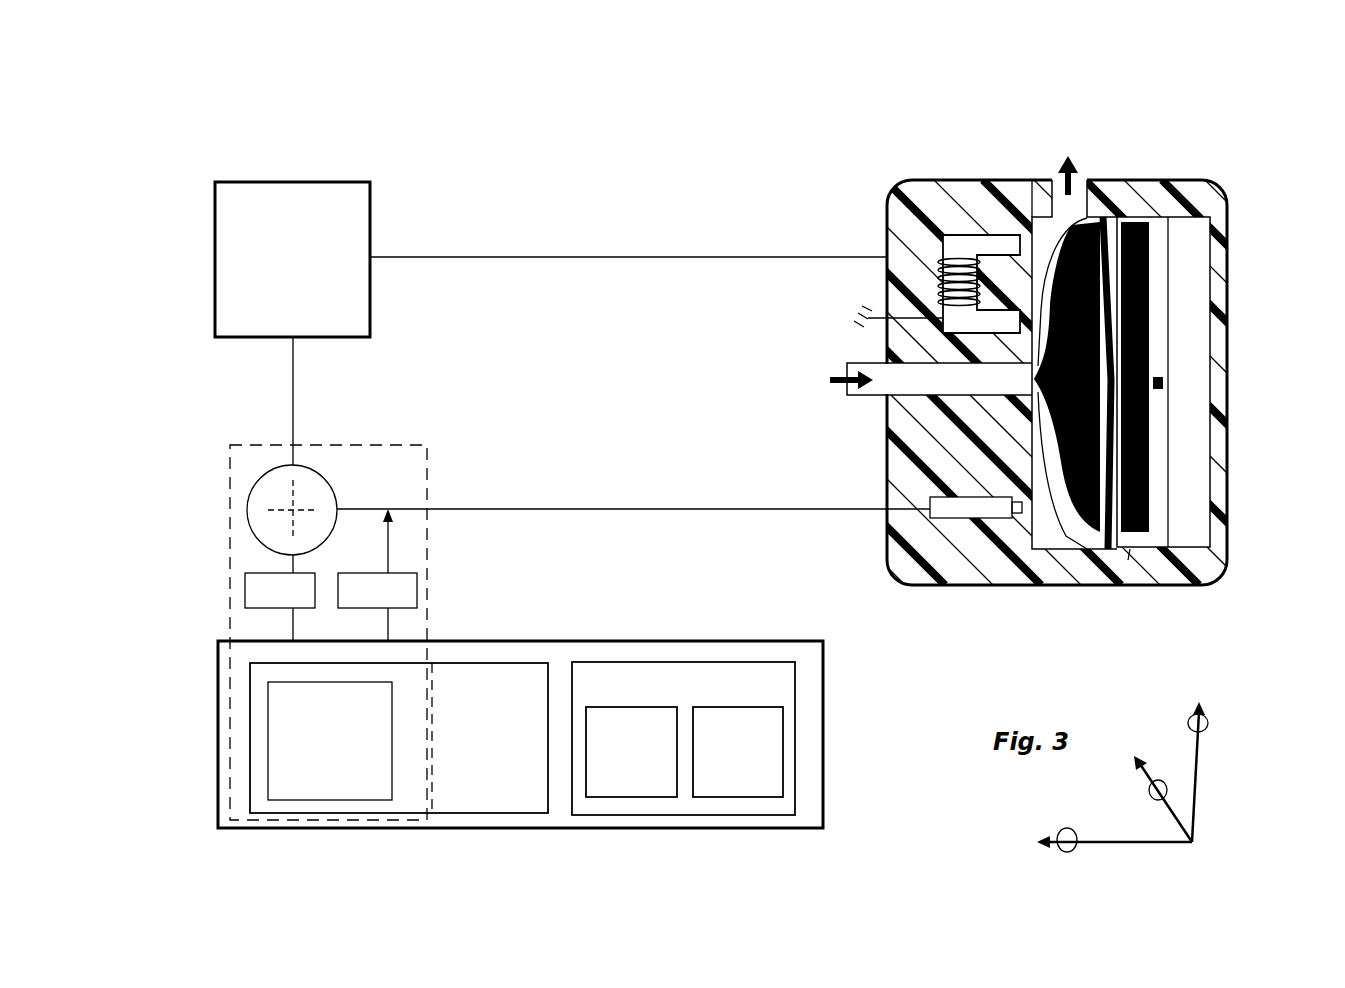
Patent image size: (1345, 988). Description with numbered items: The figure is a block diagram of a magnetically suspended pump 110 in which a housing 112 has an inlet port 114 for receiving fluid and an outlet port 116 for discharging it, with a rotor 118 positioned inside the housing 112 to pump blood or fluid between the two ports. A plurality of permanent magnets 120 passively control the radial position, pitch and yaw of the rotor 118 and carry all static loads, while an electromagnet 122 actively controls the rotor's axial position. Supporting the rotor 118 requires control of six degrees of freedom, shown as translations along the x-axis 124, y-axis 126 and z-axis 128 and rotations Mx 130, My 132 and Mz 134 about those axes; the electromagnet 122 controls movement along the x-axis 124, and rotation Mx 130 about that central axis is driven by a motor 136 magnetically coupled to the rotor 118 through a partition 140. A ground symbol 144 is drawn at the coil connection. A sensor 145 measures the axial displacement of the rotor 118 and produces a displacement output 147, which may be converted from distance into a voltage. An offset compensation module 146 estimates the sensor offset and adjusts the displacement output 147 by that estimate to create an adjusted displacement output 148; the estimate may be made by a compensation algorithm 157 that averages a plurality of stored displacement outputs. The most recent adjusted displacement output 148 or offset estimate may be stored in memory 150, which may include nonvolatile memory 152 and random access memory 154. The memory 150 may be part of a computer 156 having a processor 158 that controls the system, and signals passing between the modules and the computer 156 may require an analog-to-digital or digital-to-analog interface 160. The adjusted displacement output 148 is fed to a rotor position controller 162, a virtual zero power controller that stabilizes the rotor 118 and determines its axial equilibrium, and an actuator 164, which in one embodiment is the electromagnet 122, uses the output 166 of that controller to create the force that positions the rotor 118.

The pump 110 is at (902, 360).
The housing 112 is at (1183, 190).
The inlet port 114 is at (878, 397).
The outlet port 116 is at (1078, 185).
The rotor 118 is at (1097, 549).
The permanent magnets 120 is at (1110, 218).
The electromagnet 122 is at (983, 209).
The x-axis 124 is at (1117, 850).
The y-axis 126 is at (1199, 768).
The z-axis 128 is at (1152, 775).
The rotational displacement Mx 130 is at (1058, 880).
The rotational displacement My 132 is at (1255, 700).
The rotational displacement Mz 134 is at (1130, 808).
The motor 136 is at (1196, 286).
The partition 140 is at (1132, 549).
The electrical ground 144 is at (898, 316).
The sensor 145 is at (972, 520).
The offset compensation module 146 is at (288, 632).
The displacement output 147 is at (655, 508).
The adjusted displacement output 148 is at (296, 378).
The memory 150 is at (736, 779).
The nonvolatile memory 152 is at (645, 790).
The random access memory 154 is at (733, 791).
The computer 156 is at (529, 745).
The compensation algorithm 157 is at (268, 770).
The processor 158 is at (353, 778).
The analog-to-digital or digital-to-analog interface 160 is at (316, 574).
The rotor position controller 162 is at (283, 182).
The actuator 164 is at (943, 237).
The output 166 is at (395, 257).